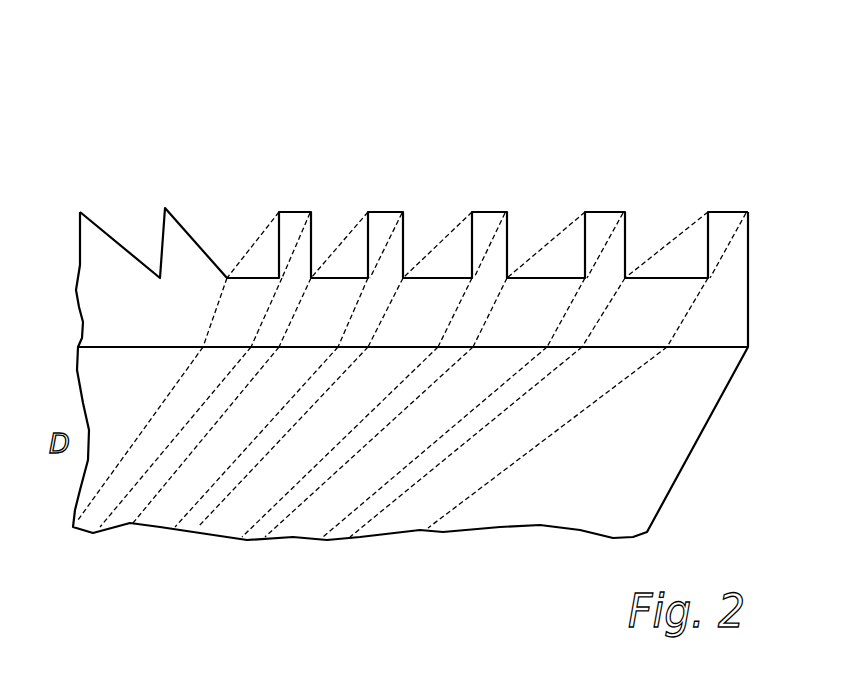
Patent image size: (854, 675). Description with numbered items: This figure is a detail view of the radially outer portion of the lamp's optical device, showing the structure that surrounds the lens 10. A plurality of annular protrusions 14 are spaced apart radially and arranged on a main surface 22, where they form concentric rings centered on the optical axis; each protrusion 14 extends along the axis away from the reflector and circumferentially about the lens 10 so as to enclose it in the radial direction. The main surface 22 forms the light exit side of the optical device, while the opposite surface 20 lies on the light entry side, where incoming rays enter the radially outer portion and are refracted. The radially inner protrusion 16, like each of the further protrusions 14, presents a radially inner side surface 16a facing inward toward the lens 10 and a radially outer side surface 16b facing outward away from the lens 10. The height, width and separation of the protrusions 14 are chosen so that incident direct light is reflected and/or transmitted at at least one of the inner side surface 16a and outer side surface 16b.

The lens 10 is at (80, 212).
The annular protrusions 14 is at (338, 64).
The radially inner protrusion 16 is at (276, 162).
The radially inner side surface 16a is at (280, 238).
The radially outer side surface 16b is at (312, 235).
The surface on light entry side 20 is at (688, 347).
The main surface 22 is at (672, 277).